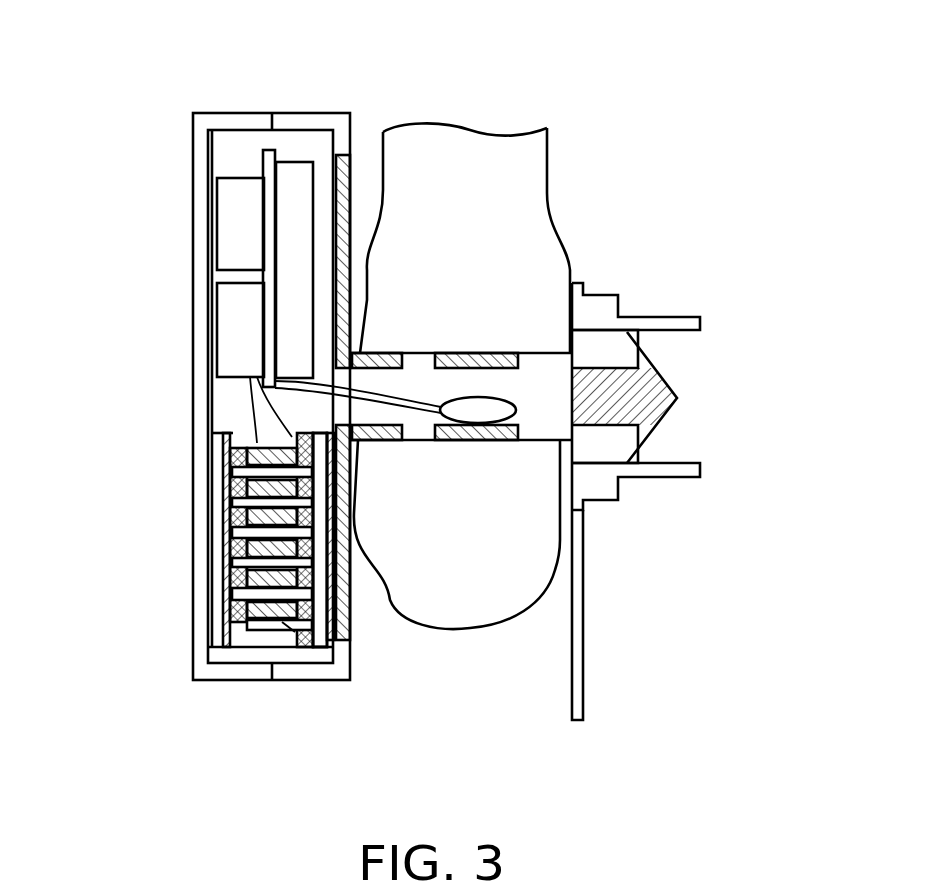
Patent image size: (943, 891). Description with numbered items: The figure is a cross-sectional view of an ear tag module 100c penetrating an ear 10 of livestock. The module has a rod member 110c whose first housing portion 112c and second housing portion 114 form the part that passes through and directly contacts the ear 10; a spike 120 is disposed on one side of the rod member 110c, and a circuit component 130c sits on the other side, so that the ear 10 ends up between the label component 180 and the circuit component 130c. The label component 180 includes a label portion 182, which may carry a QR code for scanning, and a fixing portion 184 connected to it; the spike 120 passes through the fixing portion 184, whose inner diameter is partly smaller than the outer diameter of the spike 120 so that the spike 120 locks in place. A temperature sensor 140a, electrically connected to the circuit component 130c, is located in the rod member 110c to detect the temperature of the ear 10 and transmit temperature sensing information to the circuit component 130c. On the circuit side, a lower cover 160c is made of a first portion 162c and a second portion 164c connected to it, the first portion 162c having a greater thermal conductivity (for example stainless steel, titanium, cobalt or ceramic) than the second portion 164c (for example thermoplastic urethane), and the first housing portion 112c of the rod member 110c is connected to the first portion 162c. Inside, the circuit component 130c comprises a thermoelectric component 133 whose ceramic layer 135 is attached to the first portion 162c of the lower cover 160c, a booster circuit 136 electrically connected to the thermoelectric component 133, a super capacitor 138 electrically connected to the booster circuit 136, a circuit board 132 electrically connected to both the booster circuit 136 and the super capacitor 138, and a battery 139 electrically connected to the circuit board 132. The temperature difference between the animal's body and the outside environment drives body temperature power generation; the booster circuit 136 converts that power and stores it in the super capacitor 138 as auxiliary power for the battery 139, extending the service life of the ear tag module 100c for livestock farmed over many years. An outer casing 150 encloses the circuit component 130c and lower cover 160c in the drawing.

The ear 10 is at (470, 153).
The ear tag module 100c is at (693, 761).
The rod member 110c is at (515, 698).
The first housing portion 112c is at (382, 440).
The second housing portion 114 is at (547, 440).
The spike 120 is at (647, 373).
The circuit component 130c is at (221, 349).
The circuit board 132 is at (268, 163).
The thermoelectric component 133 is at (257, 517).
The ceramic layer 135 is at (320, 640).
The booster circuit 136 is at (228, 337).
The super capacitor 138 is at (228, 218).
The battery 139 is at (297, 170).
The temperature sensor 140a is at (474, 404).
The outer casing 150 is at (222, 673).
The lower cover 160c is at (383, 748).
The first portion 162c is at (345, 630).
The second portion 164c is at (302, 673).
The label component 180 is at (750, 517).
The label portion 182 is at (578, 605).
The fixing portion 184 is at (668, 468).